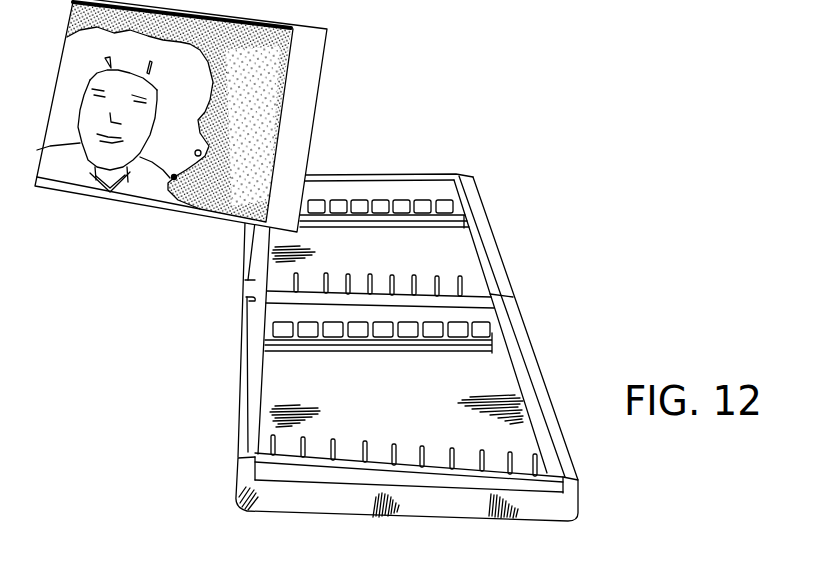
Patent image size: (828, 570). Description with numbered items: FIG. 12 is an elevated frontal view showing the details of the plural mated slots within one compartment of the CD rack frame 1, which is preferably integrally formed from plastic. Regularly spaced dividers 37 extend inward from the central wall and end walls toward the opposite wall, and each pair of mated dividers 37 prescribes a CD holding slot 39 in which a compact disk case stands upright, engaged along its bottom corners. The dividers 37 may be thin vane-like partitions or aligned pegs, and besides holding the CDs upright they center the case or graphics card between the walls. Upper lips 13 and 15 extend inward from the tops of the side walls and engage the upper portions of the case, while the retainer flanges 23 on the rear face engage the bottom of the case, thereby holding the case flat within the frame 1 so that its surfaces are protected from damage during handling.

The CD rack frame 1 is at (517, 281).
The upper lip 13 is at (255, 400).
The upper lip 15 is at (528, 375).
The retainer flange 23 is at (366, 228).
The divider 37 is at (398, 348).
The mated slot 39 is at (433, 348).